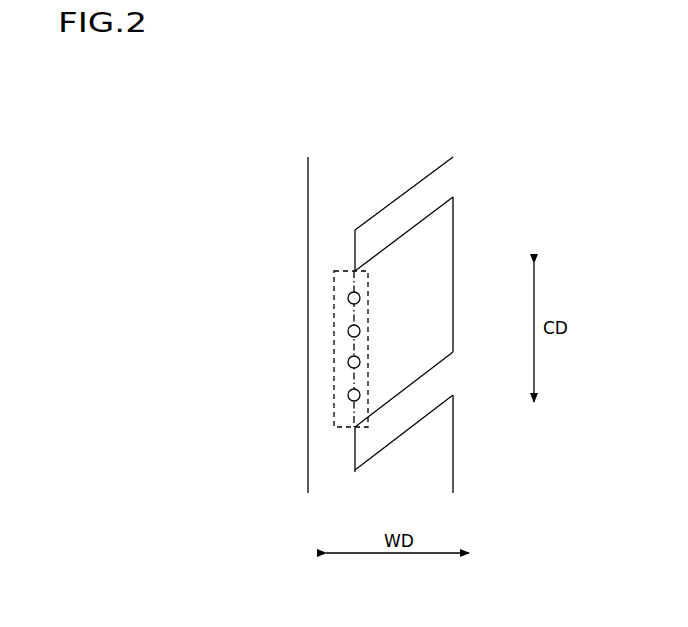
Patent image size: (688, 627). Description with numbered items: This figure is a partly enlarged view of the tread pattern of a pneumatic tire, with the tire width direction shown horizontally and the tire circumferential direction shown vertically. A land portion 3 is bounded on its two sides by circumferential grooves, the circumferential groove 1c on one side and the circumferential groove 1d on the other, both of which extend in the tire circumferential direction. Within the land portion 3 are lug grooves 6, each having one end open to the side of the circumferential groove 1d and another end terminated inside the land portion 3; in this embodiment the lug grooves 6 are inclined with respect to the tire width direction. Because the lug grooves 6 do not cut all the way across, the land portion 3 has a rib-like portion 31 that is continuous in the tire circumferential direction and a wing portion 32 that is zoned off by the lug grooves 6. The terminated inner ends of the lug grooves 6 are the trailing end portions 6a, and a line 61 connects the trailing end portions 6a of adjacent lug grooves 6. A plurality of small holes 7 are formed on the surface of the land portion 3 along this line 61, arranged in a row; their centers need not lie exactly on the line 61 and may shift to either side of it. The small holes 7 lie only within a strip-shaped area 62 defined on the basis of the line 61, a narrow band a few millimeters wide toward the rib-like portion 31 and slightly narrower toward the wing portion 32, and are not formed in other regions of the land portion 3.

The circumferential groove 1c is at (275, 146).
The circumferential groove 1d is at (470, 146).
The land portion 3 is at (387, 139).
The lug groove 6 is at (438, 187).
The trailing end portion 6a is at (355, 230).
The small hole 7 is at (348, 395).
The rib-like portion 31 is at (323, 475).
The wing portion 32 is at (413, 297).
The line 61 is at (347, 284).
The strip-shaped area 62 is at (335, 327).